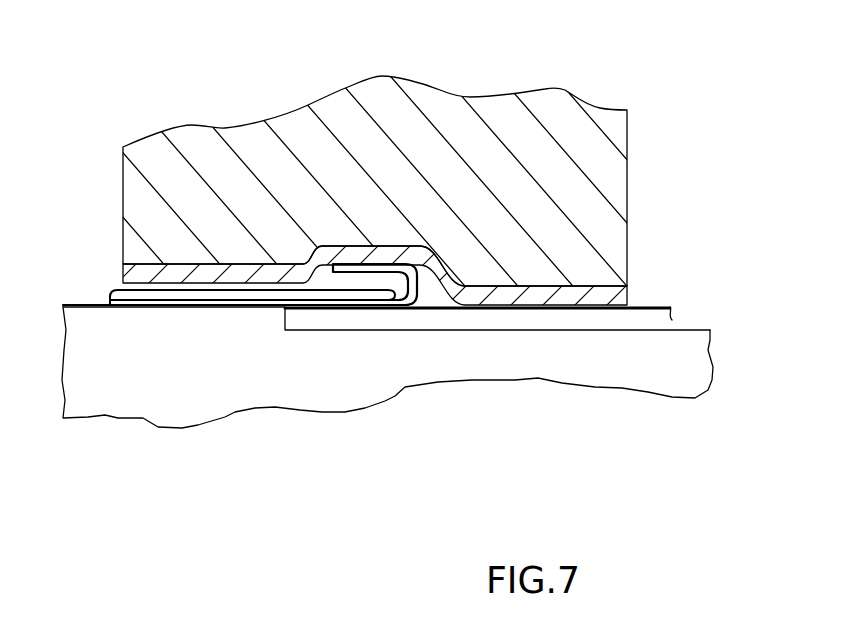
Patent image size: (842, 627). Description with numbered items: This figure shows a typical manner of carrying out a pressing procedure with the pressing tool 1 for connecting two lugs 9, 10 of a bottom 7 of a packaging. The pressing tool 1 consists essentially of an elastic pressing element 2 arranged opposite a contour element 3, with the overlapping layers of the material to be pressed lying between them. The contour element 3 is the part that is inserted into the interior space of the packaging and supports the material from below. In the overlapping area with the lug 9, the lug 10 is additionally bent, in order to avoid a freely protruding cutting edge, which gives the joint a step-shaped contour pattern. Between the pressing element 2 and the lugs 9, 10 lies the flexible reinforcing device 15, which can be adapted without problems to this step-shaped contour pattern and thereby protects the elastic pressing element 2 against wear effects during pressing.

The pressing tool 1 is at (382, 250).
The pressing element 2 is at (137, 208).
The contour element 3 is at (272, 390).
The bottom 7 is at (370, 330).
The lug 9 is at (670, 306).
The lug 10 is at (108, 297).
The reinforcing device 15 is at (625, 283).